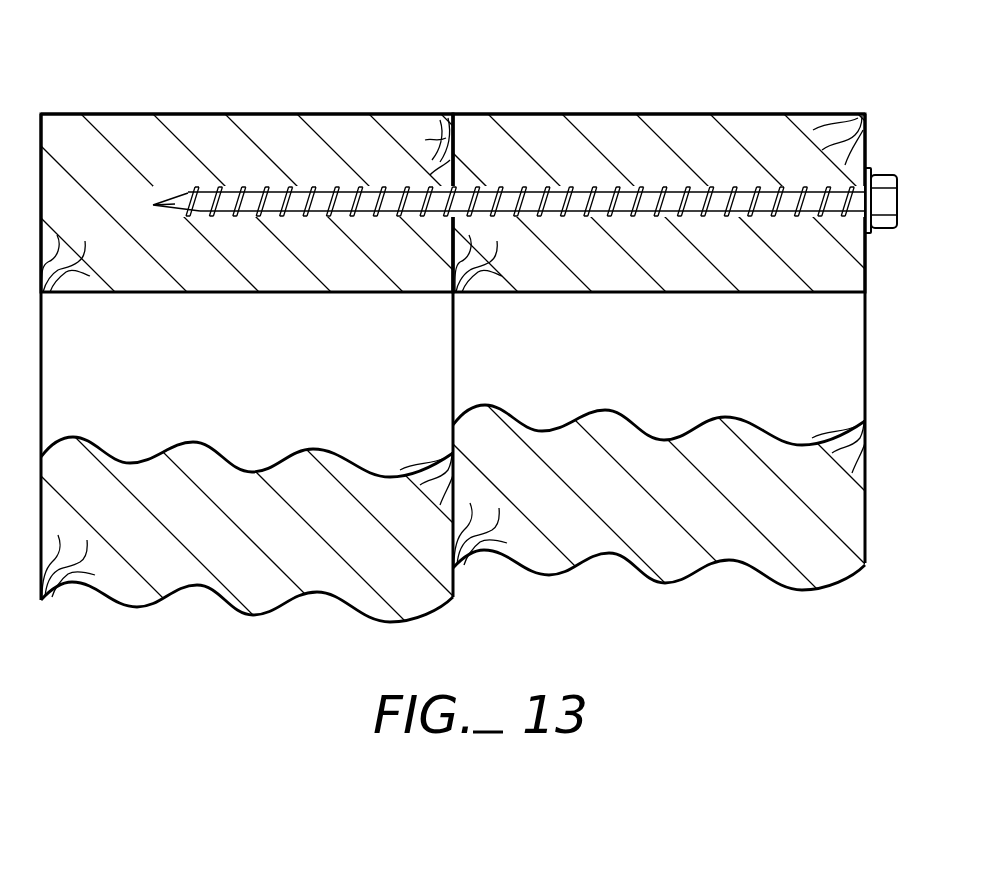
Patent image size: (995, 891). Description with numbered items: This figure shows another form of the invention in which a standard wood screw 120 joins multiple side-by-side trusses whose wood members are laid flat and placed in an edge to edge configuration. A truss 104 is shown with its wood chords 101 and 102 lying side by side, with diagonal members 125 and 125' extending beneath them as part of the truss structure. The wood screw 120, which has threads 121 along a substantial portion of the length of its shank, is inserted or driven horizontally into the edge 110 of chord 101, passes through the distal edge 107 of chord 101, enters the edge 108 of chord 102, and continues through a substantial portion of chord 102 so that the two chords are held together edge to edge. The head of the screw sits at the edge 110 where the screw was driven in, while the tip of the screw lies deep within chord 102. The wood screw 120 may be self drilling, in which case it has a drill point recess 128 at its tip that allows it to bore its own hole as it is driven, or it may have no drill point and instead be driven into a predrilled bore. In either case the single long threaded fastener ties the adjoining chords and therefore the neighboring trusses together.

The chord 101 is at (703, 113).
The chord 102 is at (122, 114).
The truss 104 is at (290, 84).
The distal edge 107 is at (438, 168).
The edge 108 is at (473, 258).
The edge 110 is at (868, 135).
The standard wood screw 120 is at (501, 180).
The screw threads 121 is at (507, 187).
The diagonal member 125 is at (689, 470).
The diagonal member 125' is at (280, 489).
The drill point recess 128 is at (183, 214).